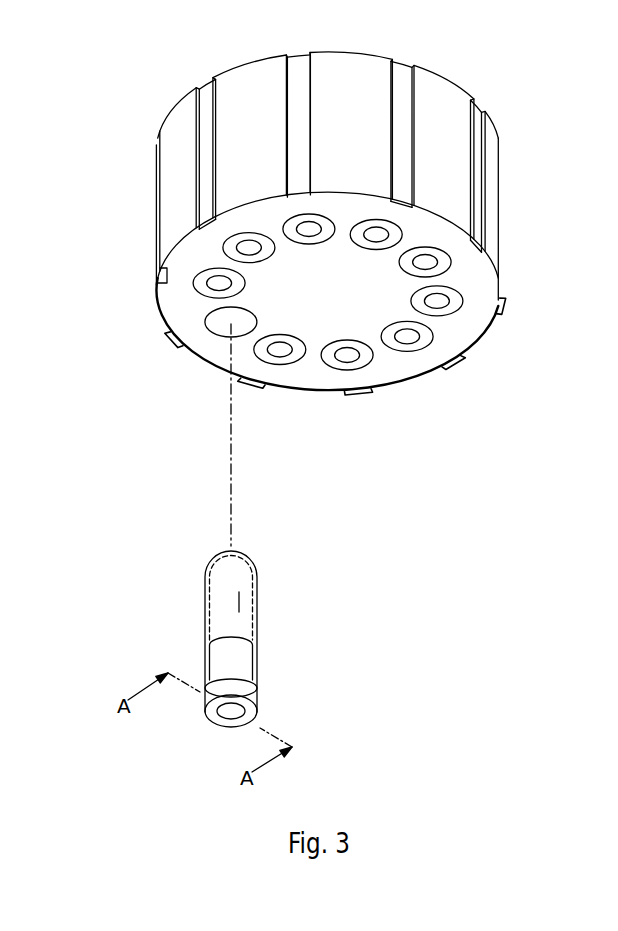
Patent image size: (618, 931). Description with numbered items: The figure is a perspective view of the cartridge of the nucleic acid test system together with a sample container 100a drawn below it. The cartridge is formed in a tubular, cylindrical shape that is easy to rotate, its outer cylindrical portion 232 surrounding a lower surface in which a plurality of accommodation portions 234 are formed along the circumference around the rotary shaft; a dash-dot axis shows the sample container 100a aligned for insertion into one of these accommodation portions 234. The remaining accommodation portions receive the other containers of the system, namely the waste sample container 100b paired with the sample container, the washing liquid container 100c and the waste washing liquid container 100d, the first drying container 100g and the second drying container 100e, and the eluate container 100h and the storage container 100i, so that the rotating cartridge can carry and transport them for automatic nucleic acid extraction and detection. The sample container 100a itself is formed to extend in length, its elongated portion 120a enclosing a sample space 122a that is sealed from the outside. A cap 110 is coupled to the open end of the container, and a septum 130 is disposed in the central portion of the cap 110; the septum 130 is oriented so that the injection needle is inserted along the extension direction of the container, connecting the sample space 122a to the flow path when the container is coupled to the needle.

The sample container 100a is at (252, 680).
The pin member 100b is at (435, 261).
The washing liquid container 100c is at (345, 357).
The waste washing liquid container 100d is at (305, 229).
The second drying container 100e is at (247, 248).
The first drying container 100g is at (403, 340).
The eluate container 100h is at (433, 302).
The storage container 100i is at (218, 283).
The cap 110 is at (205, 698).
The body portion 120a is at (205, 600).
The sample space 122a is at (239, 598).
The septum 130 is at (229, 712).
The side wall 232 is at (492, 183).
The accommodation portions 234 is at (217, 334).